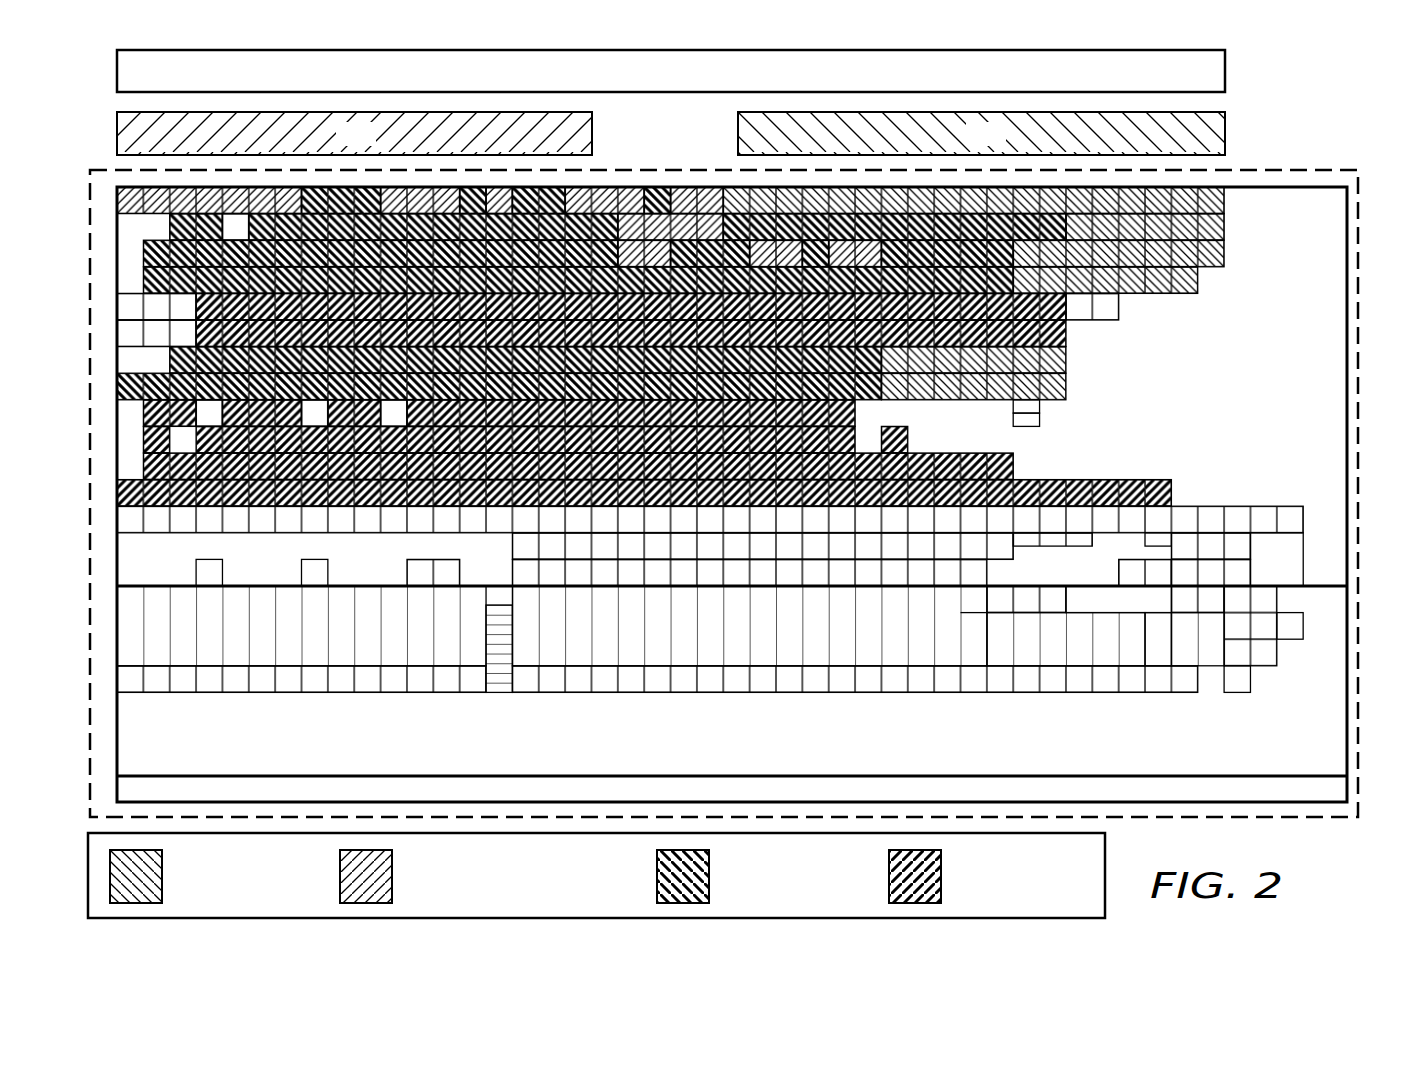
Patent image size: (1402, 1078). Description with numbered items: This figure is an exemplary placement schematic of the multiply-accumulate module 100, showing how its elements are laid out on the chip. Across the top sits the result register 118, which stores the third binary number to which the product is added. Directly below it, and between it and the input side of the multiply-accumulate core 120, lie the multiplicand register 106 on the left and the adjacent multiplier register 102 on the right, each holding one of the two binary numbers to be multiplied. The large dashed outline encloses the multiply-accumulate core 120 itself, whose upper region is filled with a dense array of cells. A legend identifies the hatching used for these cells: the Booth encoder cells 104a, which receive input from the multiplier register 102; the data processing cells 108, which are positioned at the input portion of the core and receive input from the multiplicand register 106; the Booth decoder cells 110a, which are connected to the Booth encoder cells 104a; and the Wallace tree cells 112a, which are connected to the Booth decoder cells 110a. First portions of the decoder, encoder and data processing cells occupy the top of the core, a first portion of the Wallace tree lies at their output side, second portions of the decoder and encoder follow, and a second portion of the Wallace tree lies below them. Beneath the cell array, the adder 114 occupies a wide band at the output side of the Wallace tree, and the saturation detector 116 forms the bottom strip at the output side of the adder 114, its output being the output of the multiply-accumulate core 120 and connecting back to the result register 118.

The multiply-accumulate module 100 is at (1330, 843).
The multiplier register 102 is at (738, 128).
The Booth encoder cells 104a is at (313, 904).
The multiplicand register 106 is at (592, 136).
The data processing cells 108 is at (442, 904).
The Booth decoder cells 110a is at (860, 904).
The Wallace tree cells 112a is at (1092, 904).
The adder 114 is at (792, 748).
The saturation detector 116 is at (1268, 786).
The result register 118 is at (1225, 72).
The multiply-accumulate core 120 is at (1300, 170).